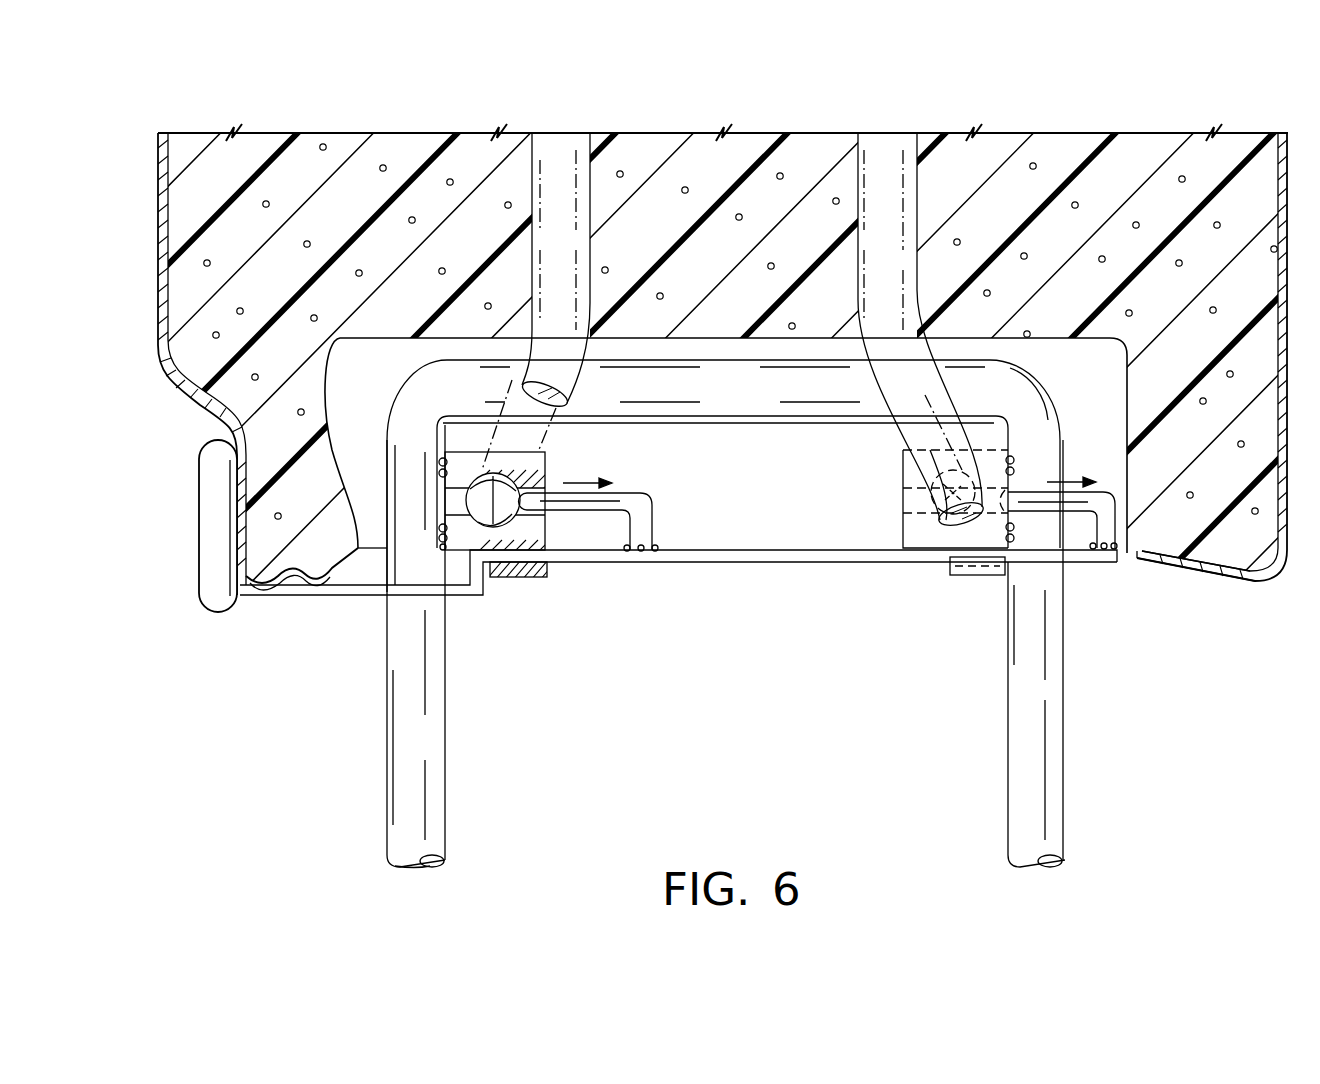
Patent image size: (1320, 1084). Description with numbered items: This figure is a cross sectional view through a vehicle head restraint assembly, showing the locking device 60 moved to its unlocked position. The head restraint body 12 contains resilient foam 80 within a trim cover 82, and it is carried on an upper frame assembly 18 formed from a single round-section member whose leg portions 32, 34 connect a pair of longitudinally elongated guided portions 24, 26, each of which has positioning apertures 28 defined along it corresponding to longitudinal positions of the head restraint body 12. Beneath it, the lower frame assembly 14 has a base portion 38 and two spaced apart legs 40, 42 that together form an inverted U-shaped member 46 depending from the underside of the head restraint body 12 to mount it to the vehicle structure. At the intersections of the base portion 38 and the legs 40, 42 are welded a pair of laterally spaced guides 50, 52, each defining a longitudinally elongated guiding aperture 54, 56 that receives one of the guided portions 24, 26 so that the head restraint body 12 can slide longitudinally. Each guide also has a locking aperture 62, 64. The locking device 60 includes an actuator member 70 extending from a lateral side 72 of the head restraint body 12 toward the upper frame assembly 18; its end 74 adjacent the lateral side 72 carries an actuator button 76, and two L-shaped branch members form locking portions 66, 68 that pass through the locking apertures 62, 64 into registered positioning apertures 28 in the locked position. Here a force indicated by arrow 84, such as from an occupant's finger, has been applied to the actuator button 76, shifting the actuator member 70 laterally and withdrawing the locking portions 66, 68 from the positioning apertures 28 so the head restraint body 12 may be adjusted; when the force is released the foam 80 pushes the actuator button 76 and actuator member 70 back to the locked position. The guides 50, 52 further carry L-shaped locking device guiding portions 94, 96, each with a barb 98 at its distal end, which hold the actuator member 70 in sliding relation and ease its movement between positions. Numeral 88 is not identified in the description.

The head restraint body 12 is at (1296, 160).
The lower frame assembly 14 is at (374, 835).
The upper frame assembly 18 is at (553, 145).
The guided portion 24 is at (508, 523).
The guided portion 26 is at (946, 528).
The positioning apertures 28 is at (495, 496).
The leg portion 32 is at (572, 150).
The leg portion 34 is at (893, 150).
The base portion 38 is at (738, 398).
The leg 40 is at (410, 770).
The leg 42 is at (1062, 756).
The inverted U-shaped member 46 is at (447, 693).
The guide 50 is at (556, 461).
The guide 52 is at (992, 438).
The guiding aperture 54 is at (446, 529).
The guiding aperture 56 is at (940, 519).
The locking device 60 is at (746, 574).
The locking aperture 62 is at (490, 497).
The locking aperture 64 is at (900, 510).
The locking portion 66 is at (618, 488).
The locking portion 68 is at (1025, 498).
The actuator member 70 is at (790, 563).
The lateral side 72 is at (163, 356).
The end 74 is at (240, 600).
The actuator button 76 is at (210, 487).
The resilient foam 80 is at (300, 568).
The trim cover 82 is at (160, 181).
The arrow 84 is at (185, 535).
The bottom flange 88 is at (1176, 569).
The locking device guiding portion 94 is at (513, 579).
The locking device guiding portion 96 is at (965, 577).
The barb 98 is at (988, 577).